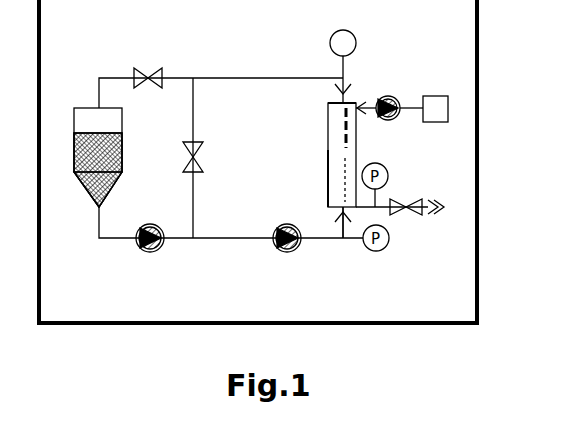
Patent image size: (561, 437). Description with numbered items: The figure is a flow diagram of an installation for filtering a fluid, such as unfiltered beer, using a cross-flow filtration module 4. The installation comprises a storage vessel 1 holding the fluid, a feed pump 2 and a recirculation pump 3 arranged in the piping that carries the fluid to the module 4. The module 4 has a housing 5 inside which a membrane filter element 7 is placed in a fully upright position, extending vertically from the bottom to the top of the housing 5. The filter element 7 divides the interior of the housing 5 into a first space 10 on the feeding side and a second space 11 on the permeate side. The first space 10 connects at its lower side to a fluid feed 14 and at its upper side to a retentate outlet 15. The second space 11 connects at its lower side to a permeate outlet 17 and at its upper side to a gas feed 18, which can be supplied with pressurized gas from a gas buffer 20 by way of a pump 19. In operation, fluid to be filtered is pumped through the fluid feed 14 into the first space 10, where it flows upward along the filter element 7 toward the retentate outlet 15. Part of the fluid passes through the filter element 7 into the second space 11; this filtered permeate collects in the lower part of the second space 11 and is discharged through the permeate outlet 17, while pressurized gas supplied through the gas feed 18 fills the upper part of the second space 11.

The storage vessel 1 is at (90, 190).
The feed pump 2 is at (150, 253).
The recirculation pump 3 is at (292, 254).
The cross-flow filtration module 4 is at (310, 146).
The housing 5 is at (327, 122).
The membrane filter element 7 is at (345, 160).
The first space 10 is at (340, 183).
The second space 11 is at (328, 200).
The fluid feed 14 is at (338, 222).
The retentate outlet 15 is at (328, 95).
The permeate outlet 17 is at (411, 208).
The gas feed 18 is at (365, 99).
The pump 19 is at (397, 97).
The gas buffer 20 is at (424, 109).